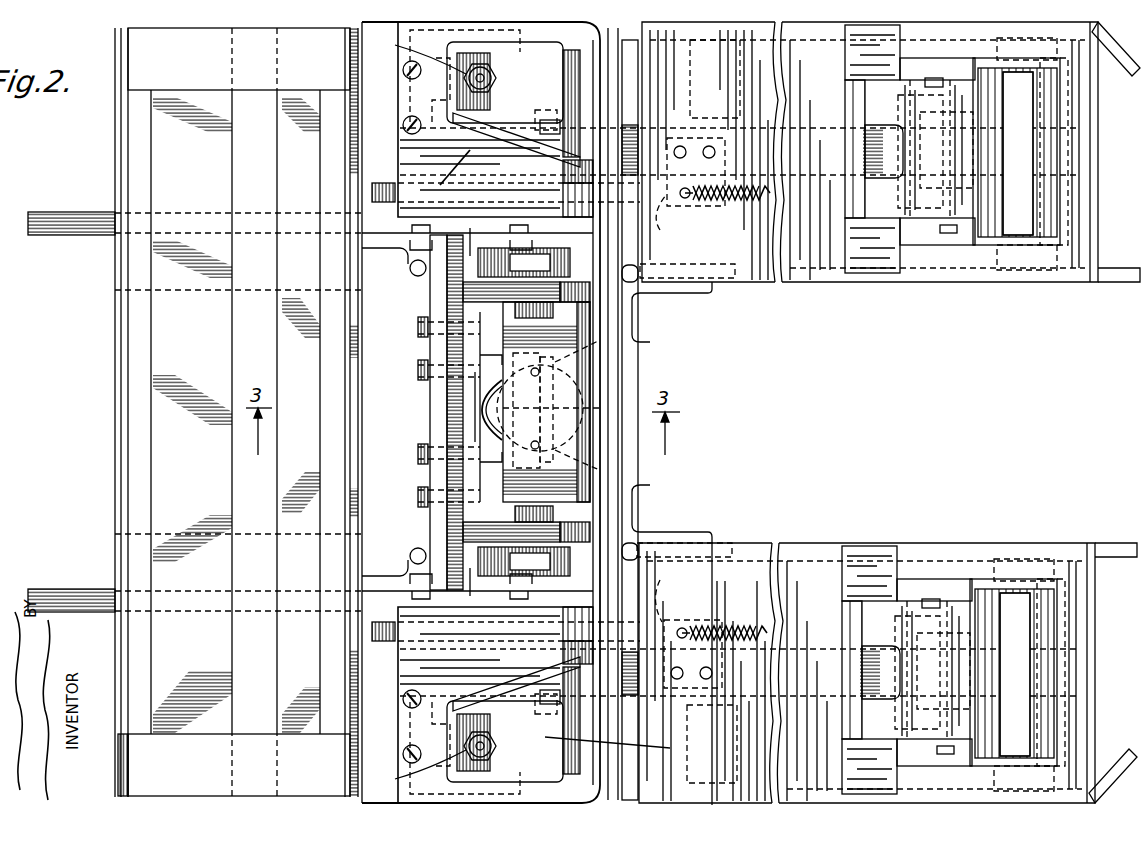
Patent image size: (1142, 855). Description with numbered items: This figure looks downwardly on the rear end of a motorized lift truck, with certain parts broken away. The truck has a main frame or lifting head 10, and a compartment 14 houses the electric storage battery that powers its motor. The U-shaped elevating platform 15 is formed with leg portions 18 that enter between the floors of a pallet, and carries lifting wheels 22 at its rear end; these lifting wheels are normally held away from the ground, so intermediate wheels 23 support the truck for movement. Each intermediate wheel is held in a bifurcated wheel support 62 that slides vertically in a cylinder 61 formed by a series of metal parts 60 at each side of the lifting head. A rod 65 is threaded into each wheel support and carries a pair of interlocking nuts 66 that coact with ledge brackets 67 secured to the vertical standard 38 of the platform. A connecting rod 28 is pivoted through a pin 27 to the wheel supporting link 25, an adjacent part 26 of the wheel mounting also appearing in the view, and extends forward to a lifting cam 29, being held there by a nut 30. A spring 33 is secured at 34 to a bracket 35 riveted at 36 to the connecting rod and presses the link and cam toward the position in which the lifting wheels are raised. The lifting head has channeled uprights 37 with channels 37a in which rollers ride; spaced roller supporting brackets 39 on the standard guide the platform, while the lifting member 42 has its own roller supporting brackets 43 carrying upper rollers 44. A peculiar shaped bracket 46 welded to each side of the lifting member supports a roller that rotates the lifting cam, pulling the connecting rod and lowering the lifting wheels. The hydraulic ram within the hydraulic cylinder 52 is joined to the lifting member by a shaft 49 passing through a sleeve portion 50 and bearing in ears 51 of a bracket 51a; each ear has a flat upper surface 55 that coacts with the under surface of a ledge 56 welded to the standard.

The main frame or lifting head 10 is at (104, 570).
The compartment 14 is at (168, 343).
The elevating platform 15 is at (606, 385).
The leg portions 18 is at (810, 285).
The lifting wheels 22 is at (1034, 151).
The intermediate wheels 23 is at (440, 92).
The link 25 is at (915, 245).
The core 26 is at (848, 140).
The pin 27 is at (945, 235).
The connecting rod 28 is at (560, 165).
The lifting cam 29 is at (372, 193).
The nut 30 is at (545, 130).
The spring 33 is at (712, 200).
The securing point 34 is at (685, 200).
The bracket 35 is at (658, 408).
The rivets 36 is at (682, 146).
The channeled uprights 37 is at (470, 240).
The channels 37a is at (535, 250).
The vertical standard 38 is at (588, 22).
The roller supporting brackets 39 is at (608, 309).
The lifting member 42 is at (430, 400).
The roller supporting brackets 43 is at (462, 288).
The upper rollers 44 is at (524, 412).
The bracket 46 is at (428, 344).
The shaft 49 is at (502, 358).
The sleeve portion 50 is at (502, 410).
The ears 51 is at (540, 372).
The bracket 51a is at (474, 425).
The hydraulic cylinder 52 is at (555, 398).
The flat upper surface 55 is at (600, 340).
The ledge 56 is at (545, 380).
The metal parts 60 is at (515, 105).
The cylinder 61 is at (462, 125).
The wheel support 62 is at (403, 126).
The rod 65 is at (466, 750).
The interlocking nuts 66 is at (403, 70).
The ledge brackets 67 is at (567, 454).